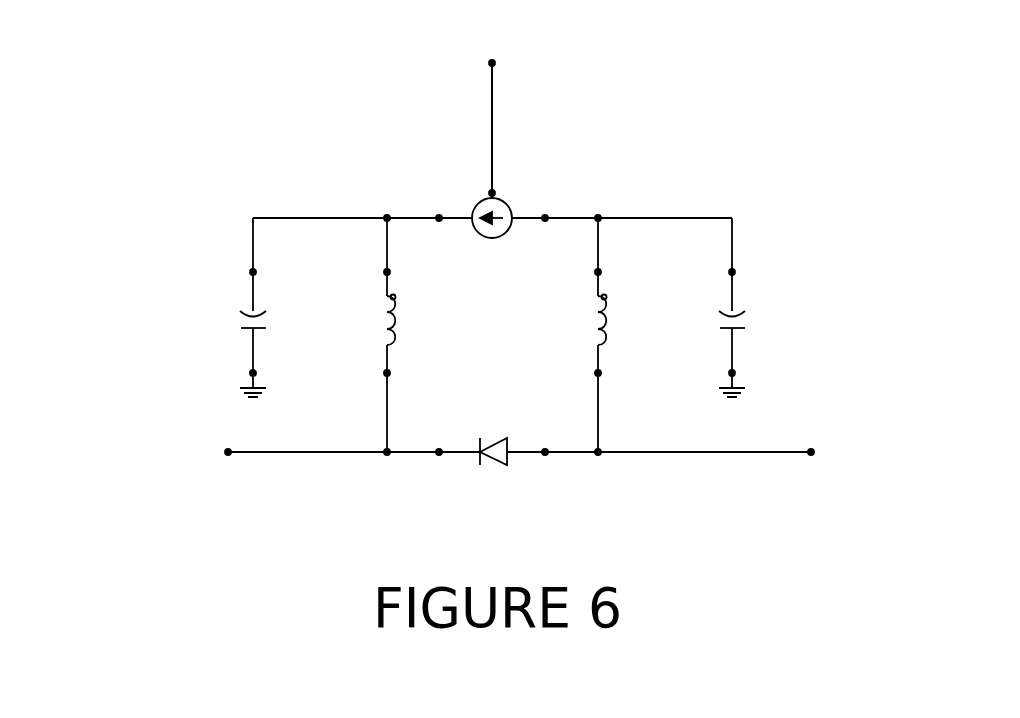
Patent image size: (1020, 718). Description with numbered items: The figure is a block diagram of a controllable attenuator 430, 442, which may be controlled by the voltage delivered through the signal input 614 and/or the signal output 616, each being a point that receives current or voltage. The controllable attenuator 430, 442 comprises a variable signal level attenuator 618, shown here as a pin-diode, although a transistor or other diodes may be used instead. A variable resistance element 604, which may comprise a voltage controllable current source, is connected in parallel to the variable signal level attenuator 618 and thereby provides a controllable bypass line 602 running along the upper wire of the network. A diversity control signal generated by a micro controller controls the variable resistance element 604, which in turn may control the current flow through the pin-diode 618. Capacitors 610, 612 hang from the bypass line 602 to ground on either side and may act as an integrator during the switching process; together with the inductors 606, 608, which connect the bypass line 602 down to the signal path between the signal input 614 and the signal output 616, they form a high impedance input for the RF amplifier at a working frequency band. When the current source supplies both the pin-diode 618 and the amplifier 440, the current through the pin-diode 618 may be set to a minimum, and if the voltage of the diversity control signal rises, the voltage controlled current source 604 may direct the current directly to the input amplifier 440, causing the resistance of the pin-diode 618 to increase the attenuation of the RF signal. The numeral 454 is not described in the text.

The controllable attenuator 430 is at (206, 131).
The controllable attenuator 442 is at (206, 131).
The input amplifier 440 is at (495, 125).
The input terminal 454 is at (495, 125).
The controllable bypass line 602 is at (553, 216).
The variable resistance element 604 is at (476, 201).
The inductor 606 is at (426, 336).
The inductor 608 is at (636, 336).
The capacitor 610 is at (289, 307).
The capacitor 612 is at (768, 307).
The signal input 614 is at (273, 470).
The signal output 616 is at (758, 452).
The variable signal level attenuator 618 is at (490, 448).